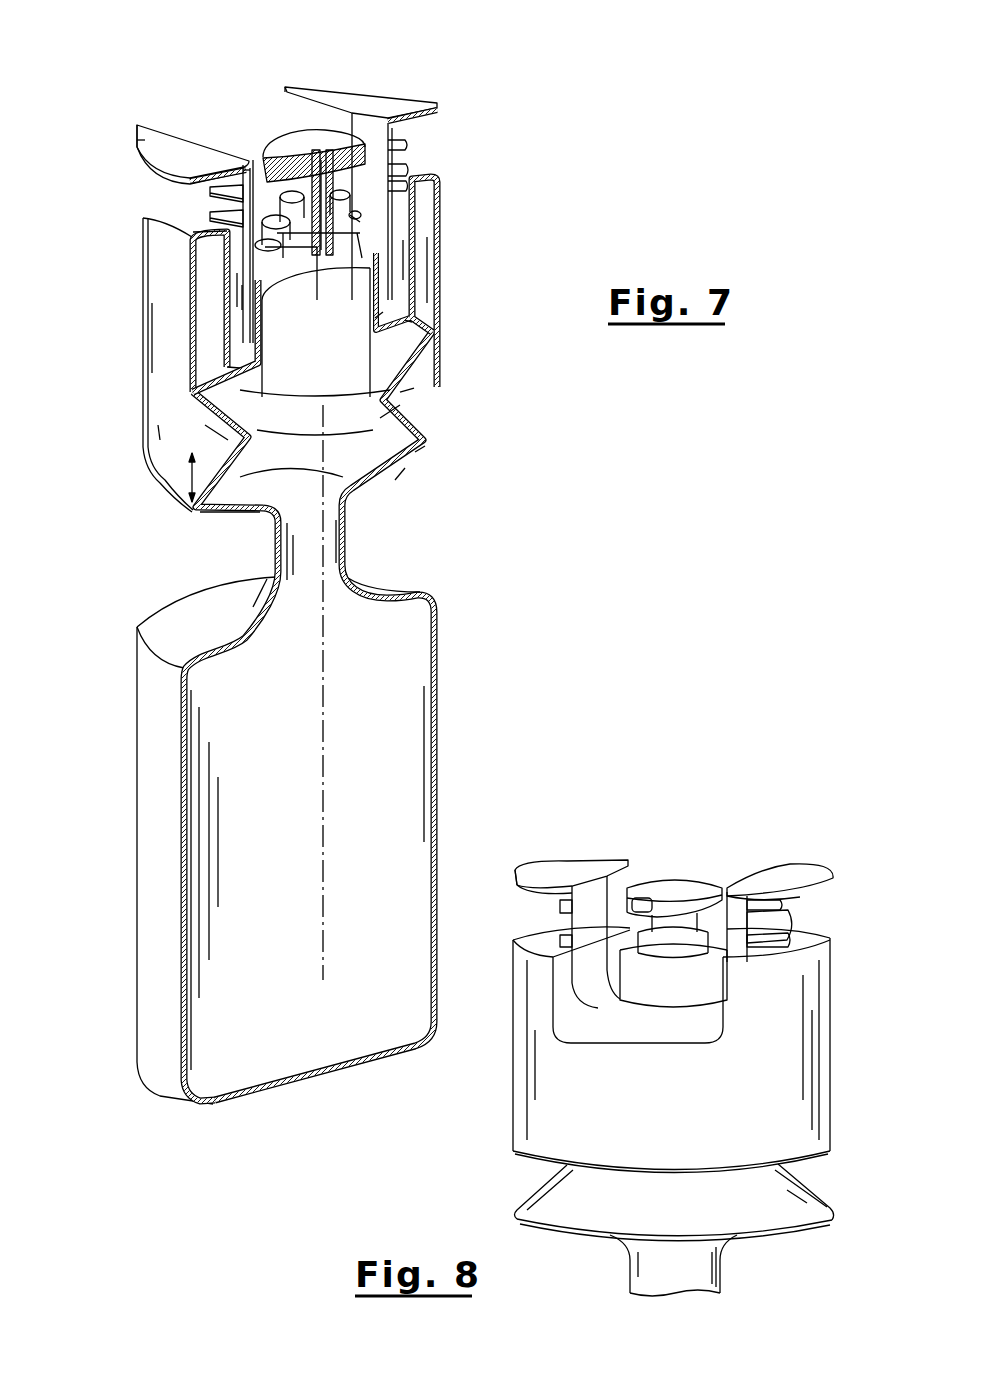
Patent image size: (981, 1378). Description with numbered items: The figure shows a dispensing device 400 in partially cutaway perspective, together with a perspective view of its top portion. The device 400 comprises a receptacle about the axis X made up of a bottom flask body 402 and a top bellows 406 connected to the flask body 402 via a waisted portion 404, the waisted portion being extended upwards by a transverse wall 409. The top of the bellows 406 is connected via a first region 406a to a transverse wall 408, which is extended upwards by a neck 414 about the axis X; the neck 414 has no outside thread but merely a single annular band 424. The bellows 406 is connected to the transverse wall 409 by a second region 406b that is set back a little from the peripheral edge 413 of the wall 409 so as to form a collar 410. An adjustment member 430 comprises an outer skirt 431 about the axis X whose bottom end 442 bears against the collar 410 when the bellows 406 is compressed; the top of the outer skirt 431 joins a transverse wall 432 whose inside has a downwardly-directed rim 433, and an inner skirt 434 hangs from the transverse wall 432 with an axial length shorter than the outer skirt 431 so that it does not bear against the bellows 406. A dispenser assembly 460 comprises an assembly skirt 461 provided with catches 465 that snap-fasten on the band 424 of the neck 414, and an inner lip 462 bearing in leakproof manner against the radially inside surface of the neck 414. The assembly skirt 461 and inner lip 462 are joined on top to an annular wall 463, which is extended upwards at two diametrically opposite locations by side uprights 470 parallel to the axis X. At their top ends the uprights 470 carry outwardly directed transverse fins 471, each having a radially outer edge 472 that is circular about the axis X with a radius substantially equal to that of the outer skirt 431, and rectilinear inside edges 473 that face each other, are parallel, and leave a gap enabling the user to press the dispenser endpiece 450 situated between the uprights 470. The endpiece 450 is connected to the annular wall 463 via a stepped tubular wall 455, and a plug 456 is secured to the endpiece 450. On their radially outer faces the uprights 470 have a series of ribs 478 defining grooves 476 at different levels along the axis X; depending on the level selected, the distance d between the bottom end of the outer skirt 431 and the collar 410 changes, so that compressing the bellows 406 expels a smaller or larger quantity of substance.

In FIG. 7, the device 400 is at (529, 206).
In FIG. 7, the bottom flask body 402 is at (437, 738).
In FIG. 7, the waisted portion 404 is at (350, 550).
In FIG. 8, the waisted portion 404 is at (626, 1263).
In FIG. 7, the top bellows 406 is at (437, 420).
In FIG. 8, the top bellows 406 is at (525, 1200).
In FIG. 7, the first region 406a is at (262, 380).
In FIG. 7, the second region 406b is at (193, 518).
In FIG. 7, the transverse wall 408 is at (441, 368).
In FIG. 7, the transverse wall 409 is at (407, 467).
In FIG. 7, the collar 410 is at (160, 497).
In FIG. 7, the peripheral edge 413 is at (423, 447).
In FIG. 7, the neck 414 is at (378, 318).
In FIG. 7, the annular band 424 is at (398, 298).
In FIG. 7, the adjustment member 430 is at (192, 350).
In FIG. 7, the outer skirt 431 is at (148, 440).
In FIG. 8, the outer skirt 431 is at (515, 1140).
In FIG. 7, the transverse wall 432 is at (200, 238).
In FIG. 8, the transverse wall 432 is at (540, 936).
In FIG. 7, the downwardly-directed rim 433 is at (245, 268).
In FIG. 7, the inner skirt 434 is at (158, 430).
In FIG. 7, the bottom end 442 is at (415, 388).
In FIG. 7, the dispenser endpiece 450 is at (308, 132).
In FIG. 8, the dispenser endpiece 450 is at (663, 888).
In FIG. 7, the stepped tubular wall 455 is at (290, 250).
In FIG. 8, the stepped tubular wall 455 is at (710, 987).
In FIG. 7, the plug 456 is at (357, 217).
In FIG. 7, the dispenser assembly 460 is at (387, 94).
In FIG. 7, the assembly skirt 461 is at (167, 343).
In FIG. 7, the inner lip 462 is at (365, 280).
In FIG. 7, the annular wall 463 is at (378, 262).
In FIG. 7, the catches 465 is at (410, 318).
In FIG. 7, the side uprights 470 is at (262, 200).
In FIG. 8, the side uprights 470 is at (602, 887).
In FIG. 7, the transverse fins 471 is at (168, 137).
In FIG. 8, the transverse fins 471 is at (565, 867).
In FIG. 7, the radially outer edge 472 is at (136, 150).
In FIG. 7, the rectilinear inside edges 473 is at (212, 150).
In FIG. 7, the grooves 476 is at (398, 160).
In FIG. 8, the grooves 476 is at (765, 925).
In FIG. 7, the ribs 478 is at (215, 190).
In FIG. 8, the ribs 478 is at (570, 906).
In FIG. 7, the axis X is at (322, 788).
In FIG. 7, the distance d is at (180, 477).